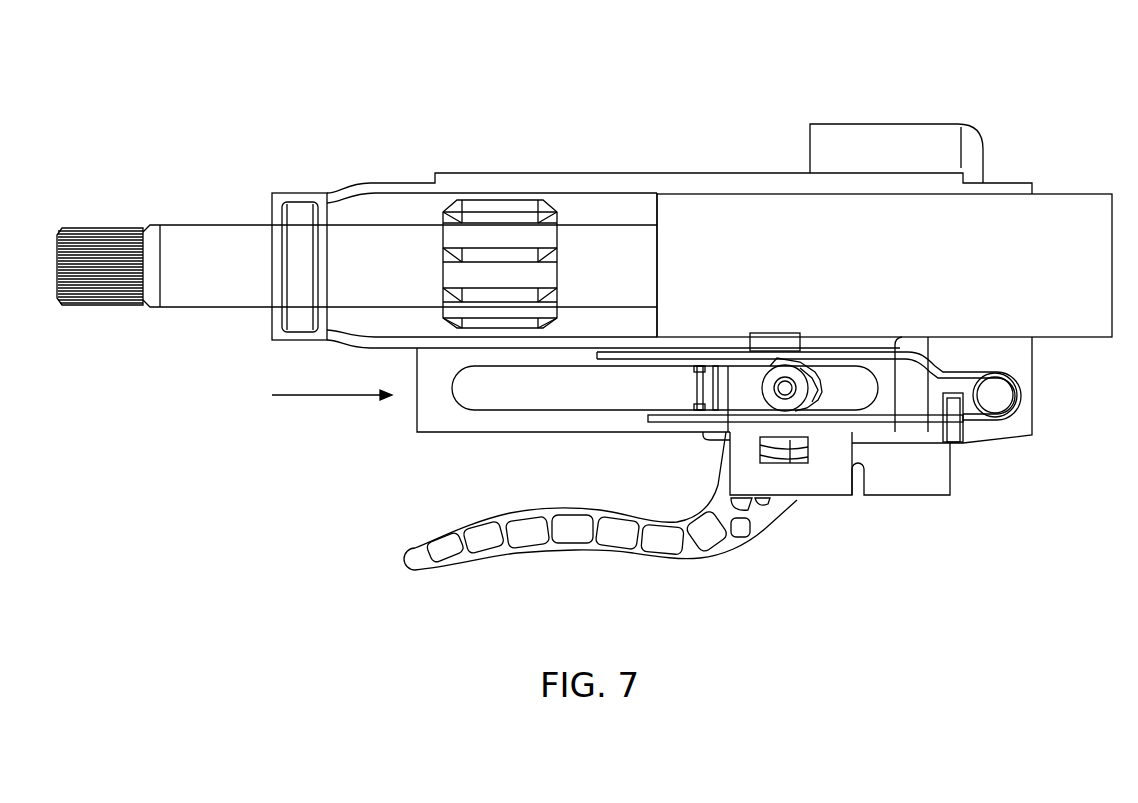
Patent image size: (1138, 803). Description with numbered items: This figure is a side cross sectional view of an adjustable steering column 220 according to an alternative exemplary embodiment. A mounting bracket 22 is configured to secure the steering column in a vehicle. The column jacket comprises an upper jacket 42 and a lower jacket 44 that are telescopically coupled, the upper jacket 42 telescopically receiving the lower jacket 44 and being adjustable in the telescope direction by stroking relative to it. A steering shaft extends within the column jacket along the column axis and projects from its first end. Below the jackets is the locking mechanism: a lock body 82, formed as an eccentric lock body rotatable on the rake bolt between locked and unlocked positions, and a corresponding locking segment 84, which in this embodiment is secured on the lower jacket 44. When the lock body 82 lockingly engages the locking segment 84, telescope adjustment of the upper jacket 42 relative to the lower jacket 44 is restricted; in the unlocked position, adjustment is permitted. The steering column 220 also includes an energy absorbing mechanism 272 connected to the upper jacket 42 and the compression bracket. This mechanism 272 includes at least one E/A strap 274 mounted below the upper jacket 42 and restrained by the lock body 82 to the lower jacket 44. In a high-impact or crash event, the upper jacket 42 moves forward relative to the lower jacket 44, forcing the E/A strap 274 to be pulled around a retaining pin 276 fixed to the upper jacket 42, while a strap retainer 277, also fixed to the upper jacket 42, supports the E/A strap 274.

The adjustable steering column 220 is at (618, 103).
The mounting bracket 22 is at (893, 135).
The upper jacket 42 is at (456, 181).
The lower jacket 44 is at (1075, 204).
The locking segment 84 is at (777, 341).
The lock body 82 is at (762, 372).
The E/A strap 274 is at (978, 419).
The retaining pin 276 is at (999, 394).
The strap retainer 277 is at (907, 437).
The energy absorbing (E/A) mechanism 272 is at (847, 525).